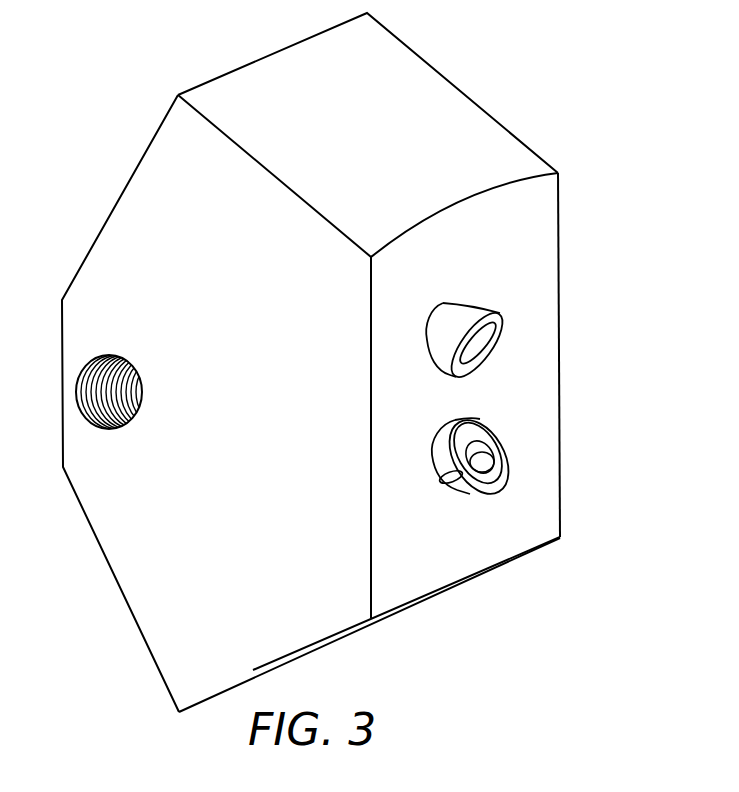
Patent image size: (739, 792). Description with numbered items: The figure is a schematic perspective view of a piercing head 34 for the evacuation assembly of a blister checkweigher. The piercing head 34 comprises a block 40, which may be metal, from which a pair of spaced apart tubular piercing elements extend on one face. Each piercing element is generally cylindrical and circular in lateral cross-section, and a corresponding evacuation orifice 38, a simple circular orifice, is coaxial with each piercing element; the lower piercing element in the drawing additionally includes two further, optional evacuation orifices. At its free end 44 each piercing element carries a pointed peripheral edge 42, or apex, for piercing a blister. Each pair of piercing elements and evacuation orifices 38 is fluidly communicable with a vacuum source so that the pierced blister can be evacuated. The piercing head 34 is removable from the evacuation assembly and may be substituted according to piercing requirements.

The piercing head 34 is at (535, 73).
The evacuation orifice 38 is at (483, 444).
The block 40 is at (240, 419).
The pointed peripheral edge 42 is at (499, 489).
The free end 44 is at (477, 492).